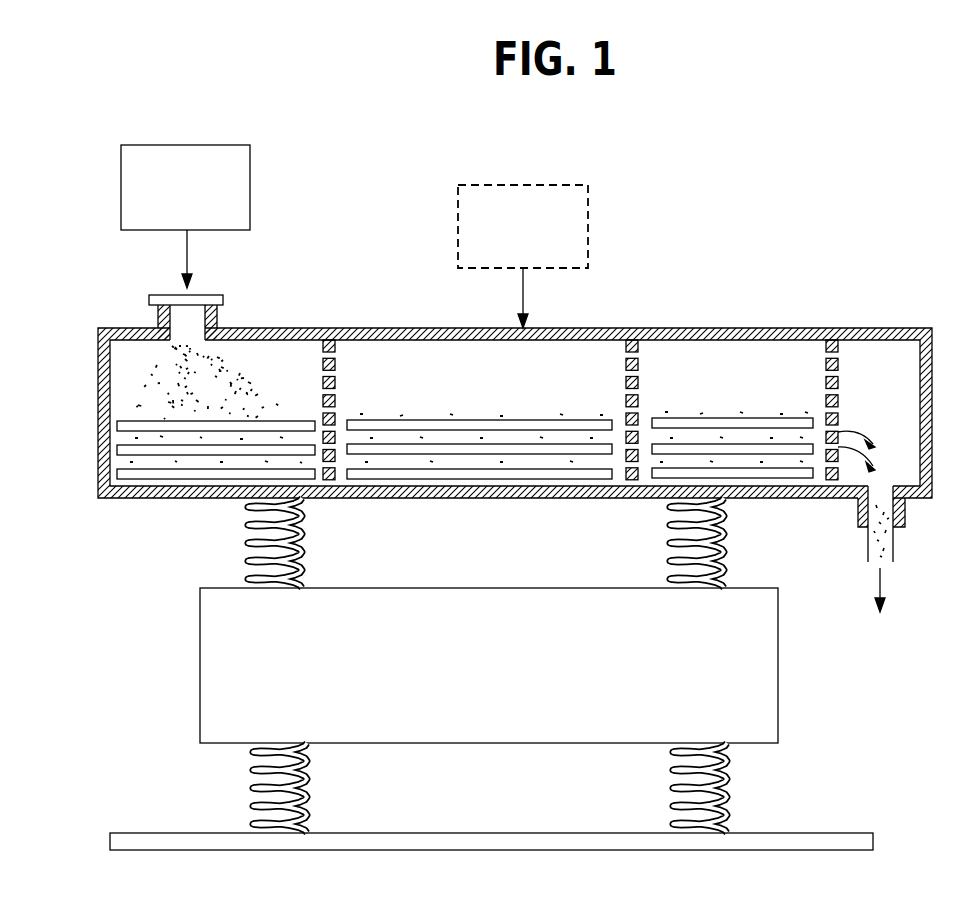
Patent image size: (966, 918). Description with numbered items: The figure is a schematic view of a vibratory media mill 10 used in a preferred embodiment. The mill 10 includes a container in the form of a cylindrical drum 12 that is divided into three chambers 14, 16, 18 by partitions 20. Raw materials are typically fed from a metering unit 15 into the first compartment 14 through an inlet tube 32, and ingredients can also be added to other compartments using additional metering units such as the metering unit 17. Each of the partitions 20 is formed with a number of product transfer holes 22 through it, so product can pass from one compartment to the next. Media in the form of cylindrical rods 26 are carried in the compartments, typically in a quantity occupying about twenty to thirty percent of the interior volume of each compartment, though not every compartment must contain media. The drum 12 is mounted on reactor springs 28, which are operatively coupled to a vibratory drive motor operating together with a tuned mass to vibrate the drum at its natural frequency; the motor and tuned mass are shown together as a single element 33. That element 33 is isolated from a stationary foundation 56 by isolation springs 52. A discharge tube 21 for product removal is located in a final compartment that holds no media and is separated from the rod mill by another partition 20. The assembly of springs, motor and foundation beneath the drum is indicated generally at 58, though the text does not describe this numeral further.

The mill 10 is at (850, 293).
The cylindrical drum 12 is at (307, 328).
The first compartment 14 is at (258, 367).
The metering unit 15 is at (250, 167).
The chamber 16 is at (475, 357).
The metering unit 17 is at (588, 203).
The chamber 18 is at (718, 365).
The partitions 20 is at (336, 368).
The discharge tube 21 is at (903, 515).
The product transfer holes 22 is at (337, 408).
The cylindrical rods 26 is at (117, 472).
The reactor springs 28 is at (300, 540).
The inlet tube 32 is at (153, 297).
The motor and tuned mass 33 is at (505, 677).
The isolation springs 52 is at (257, 793).
The stationary foundation 56 is at (112, 835).
The vibration mounting assembly 58 is at (462, 674).